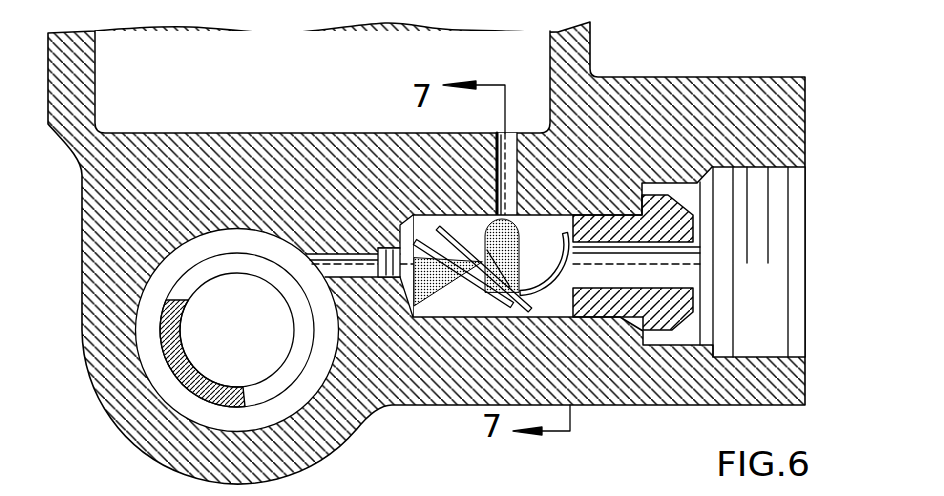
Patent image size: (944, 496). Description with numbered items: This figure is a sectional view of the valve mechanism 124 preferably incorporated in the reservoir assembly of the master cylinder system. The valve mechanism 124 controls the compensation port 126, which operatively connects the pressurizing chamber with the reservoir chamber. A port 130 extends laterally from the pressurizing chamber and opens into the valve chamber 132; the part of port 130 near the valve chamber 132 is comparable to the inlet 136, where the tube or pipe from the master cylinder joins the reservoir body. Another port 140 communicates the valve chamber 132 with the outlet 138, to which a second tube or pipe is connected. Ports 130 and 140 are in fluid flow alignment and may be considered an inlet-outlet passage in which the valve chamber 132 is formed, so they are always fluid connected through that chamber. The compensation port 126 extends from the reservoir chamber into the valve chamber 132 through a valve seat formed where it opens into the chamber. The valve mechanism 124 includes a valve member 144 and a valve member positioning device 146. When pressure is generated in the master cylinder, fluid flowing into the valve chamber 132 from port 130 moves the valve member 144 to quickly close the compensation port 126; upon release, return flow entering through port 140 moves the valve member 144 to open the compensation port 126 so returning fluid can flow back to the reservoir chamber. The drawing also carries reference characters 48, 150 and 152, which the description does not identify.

The partial ring member 48 is at (164, 300).
The valve mechanism 124 is at (468, 299).
The compensation port 126 is at (517, 132).
The port 130 is at (328, 266).
The valve chamber 132 is at (489, 305).
The inlet 136 is at (379, 288).
The outlet 138 is at (697, 273).
The port 140 is at (611, 278).
The valve member 144 is at (472, 225).
The valve member positioning device 146 is at (566, 231).
The annular chamber 150 is at (302, 400).
The bore 152 is at (155, 388).